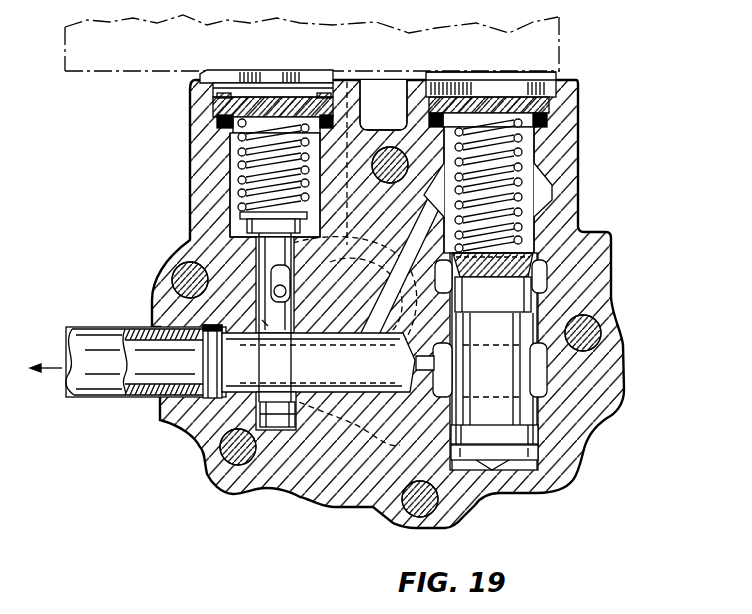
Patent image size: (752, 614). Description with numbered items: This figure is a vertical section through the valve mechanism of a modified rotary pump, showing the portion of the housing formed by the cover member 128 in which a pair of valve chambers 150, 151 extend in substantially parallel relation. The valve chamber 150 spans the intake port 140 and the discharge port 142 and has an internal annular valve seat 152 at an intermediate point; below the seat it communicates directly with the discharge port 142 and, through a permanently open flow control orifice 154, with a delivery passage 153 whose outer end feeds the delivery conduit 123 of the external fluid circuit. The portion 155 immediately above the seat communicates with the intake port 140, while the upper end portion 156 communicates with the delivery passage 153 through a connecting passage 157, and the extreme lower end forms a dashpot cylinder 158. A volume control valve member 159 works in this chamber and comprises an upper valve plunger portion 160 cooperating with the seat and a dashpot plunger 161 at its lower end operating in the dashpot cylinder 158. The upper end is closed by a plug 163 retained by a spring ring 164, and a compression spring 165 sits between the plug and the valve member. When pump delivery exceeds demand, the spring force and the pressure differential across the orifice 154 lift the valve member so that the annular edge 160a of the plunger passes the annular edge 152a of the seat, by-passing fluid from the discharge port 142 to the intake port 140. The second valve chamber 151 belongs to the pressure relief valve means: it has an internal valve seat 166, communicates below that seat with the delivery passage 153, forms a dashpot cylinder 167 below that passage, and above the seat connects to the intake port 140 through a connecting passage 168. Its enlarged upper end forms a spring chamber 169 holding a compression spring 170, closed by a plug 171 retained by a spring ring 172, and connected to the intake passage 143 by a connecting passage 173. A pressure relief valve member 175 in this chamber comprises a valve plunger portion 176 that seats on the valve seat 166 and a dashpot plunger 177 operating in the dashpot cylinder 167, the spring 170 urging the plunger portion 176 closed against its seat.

The delivery conduit 123 is at (102, 328).
The cover member 128 is at (570, 212).
The intake port 140 is at (332, 243).
The discharge port 142 is at (374, 446).
The intake passage 143 is at (342, 222).
The valve chamber 150 is at (552, 290).
The valve chamber 151 is at (233, 361).
The annular valve seat 152 is at (545, 366).
The annular edge of valve seat 152a is at (493, 294).
The delivery passage 153 is at (345, 395).
The flow control orifice 154 is at (458, 371).
The valve chamber portion 155 is at (548, 258).
The upper end portion of valve chamber 156 is at (530, 150).
The connecting passage 157 is at (405, 262).
The dashpot cylinder 158 is at (548, 452).
The volume control valve member 159 is at (548, 408).
The valve plunger portion 160 is at (543, 278).
The annular edge of valve plunger portion 160a is at (494, 369).
The dashpot plunger 161 is at (548, 432).
The plug 163 is at (528, 97).
The spring ring 164 is at (548, 100).
The compression spring 165 is at (525, 183).
The valve seat 166 is at (266, 320).
The dashpot cylinder 167 is at (198, 425).
The connecting passage 168 is at (277, 284).
The spring chamber 169 is at (237, 187).
The compression spring 170 is at (240, 163).
The plug 171 is at (262, 103).
The spring ring 172 is at (383, 105).
The connecting passage 173 is at (383, 105).
The pressure relief valve member 175 is at (282, 356).
The valve plunger portion 176 is at (265, 257).
The dashpot plunger 177 is at (295, 407).